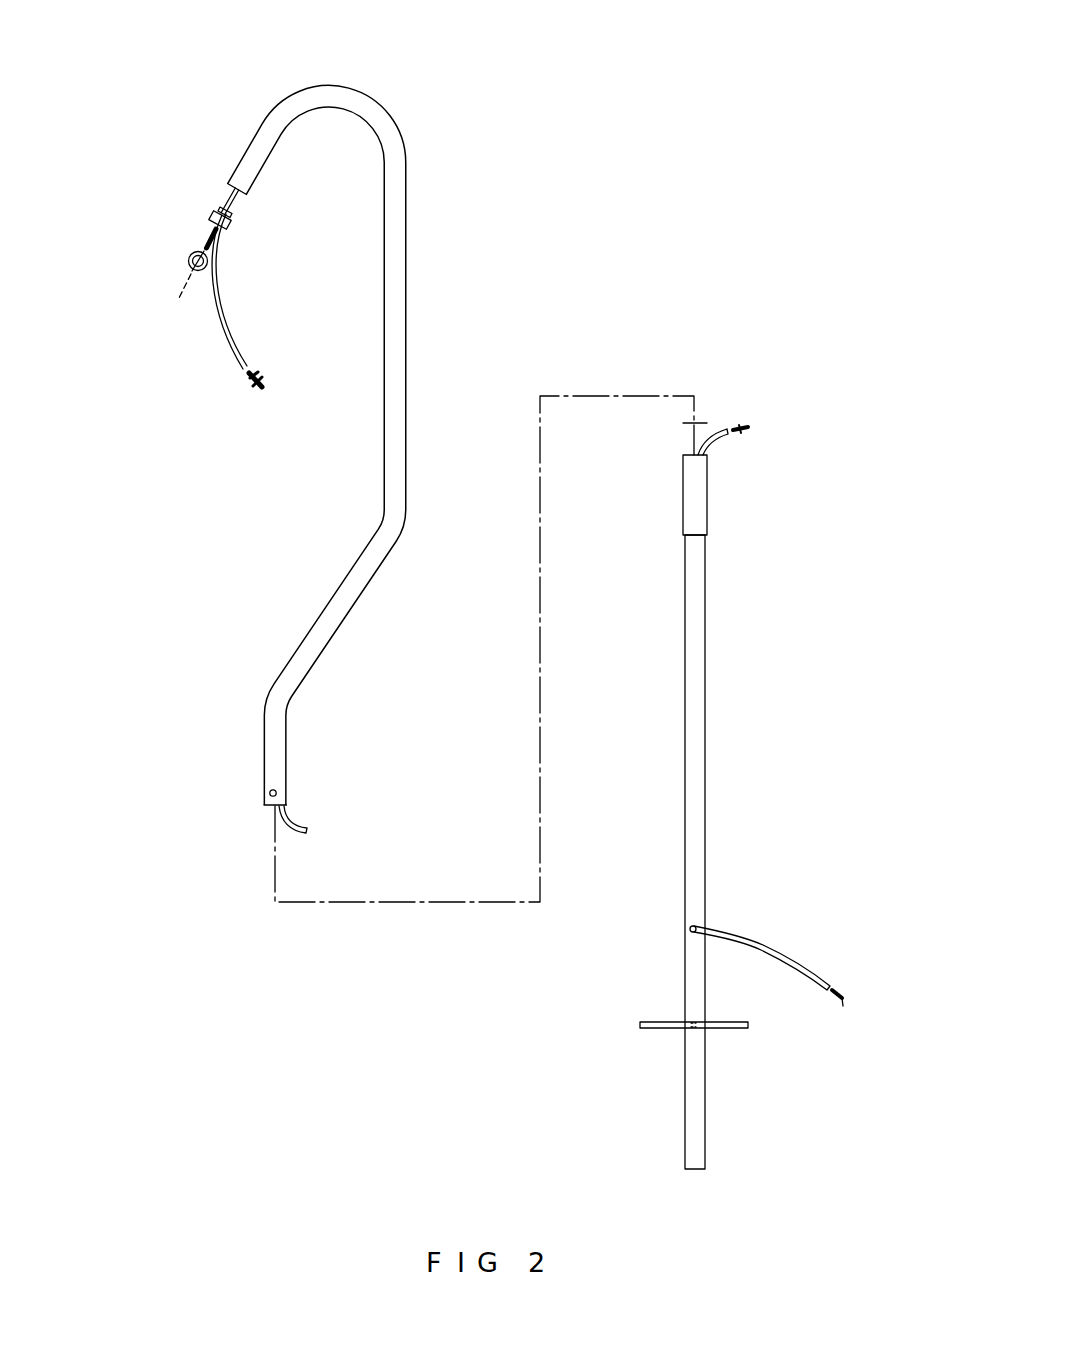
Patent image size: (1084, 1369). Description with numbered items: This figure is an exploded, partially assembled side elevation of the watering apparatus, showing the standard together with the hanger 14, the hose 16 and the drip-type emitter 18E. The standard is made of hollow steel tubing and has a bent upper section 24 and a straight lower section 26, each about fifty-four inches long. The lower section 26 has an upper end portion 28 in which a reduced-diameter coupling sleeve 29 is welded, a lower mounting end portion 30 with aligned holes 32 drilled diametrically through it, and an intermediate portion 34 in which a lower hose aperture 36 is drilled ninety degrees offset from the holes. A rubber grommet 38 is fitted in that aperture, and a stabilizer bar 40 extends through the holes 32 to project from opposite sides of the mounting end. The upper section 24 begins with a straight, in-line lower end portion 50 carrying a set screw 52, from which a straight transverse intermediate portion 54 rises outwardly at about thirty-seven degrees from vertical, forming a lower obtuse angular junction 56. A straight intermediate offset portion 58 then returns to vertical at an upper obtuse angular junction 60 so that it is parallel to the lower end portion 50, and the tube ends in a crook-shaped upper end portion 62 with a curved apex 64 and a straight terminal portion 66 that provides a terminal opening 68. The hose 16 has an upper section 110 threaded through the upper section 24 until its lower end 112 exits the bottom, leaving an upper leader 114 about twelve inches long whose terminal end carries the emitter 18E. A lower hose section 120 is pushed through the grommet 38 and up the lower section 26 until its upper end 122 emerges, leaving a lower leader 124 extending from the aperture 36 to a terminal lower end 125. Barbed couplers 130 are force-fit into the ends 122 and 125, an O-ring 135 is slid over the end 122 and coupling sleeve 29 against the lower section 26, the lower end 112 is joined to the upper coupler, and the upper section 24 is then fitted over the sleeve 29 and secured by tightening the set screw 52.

The hanger 14 is at (182, 276).
The hose 16 is at (226, 361).
The drip-type emitter 18E is at (254, 387).
The bent upper section 24 is at (419, 201).
The straight lower section 26 is at (718, 636).
The upper end portion 28 is at (706, 572).
The coupling sleeve 29 is at (707, 494).
The lower mounting end portion 30 is at (706, 1130).
The aligned holes 32 is at (683, 1029).
The intermediate portion 34 is at (693, 693).
The lower hose aperture 36 is at (697, 926).
The rubber grommet 38 is at (693, 932).
The stabilizer bar 40 is at (750, 1029).
The lower end portion 50 is at (263, 758).
The set screw 52 is at (277, 792).
The transverse intermediate portion 54 is at (350, 614).
The lower obtuse angular junction 56 is at (292, 690).
The intermediate offset portion 58 is at (407, 350).
The upper obtuse angular junction 60 is at (397, 547).
The crook-shaped upper end portion 62 is at (305, 86).
The curved apex 64 is at (334, 97).
The straight terminal portion 66 is at (255, 153).
The terminal opening 68 is at (230, 187).
The upper section of hose 110 is at (208, 326).
The lower end of upper hose section 112 is at (300, 832).
The upper leader 114 is at (217, 303).
The lower section of hose 120 is at (773, 949).
The upper end of lower hose section 122 is at (727, 438).
The lower leader 124 is at (814, 972).
The terminal lower end 125 is at (823, 985).
The barbed couplers 130 is at (748, 427).
The O-ring 135 is at (702, 423).